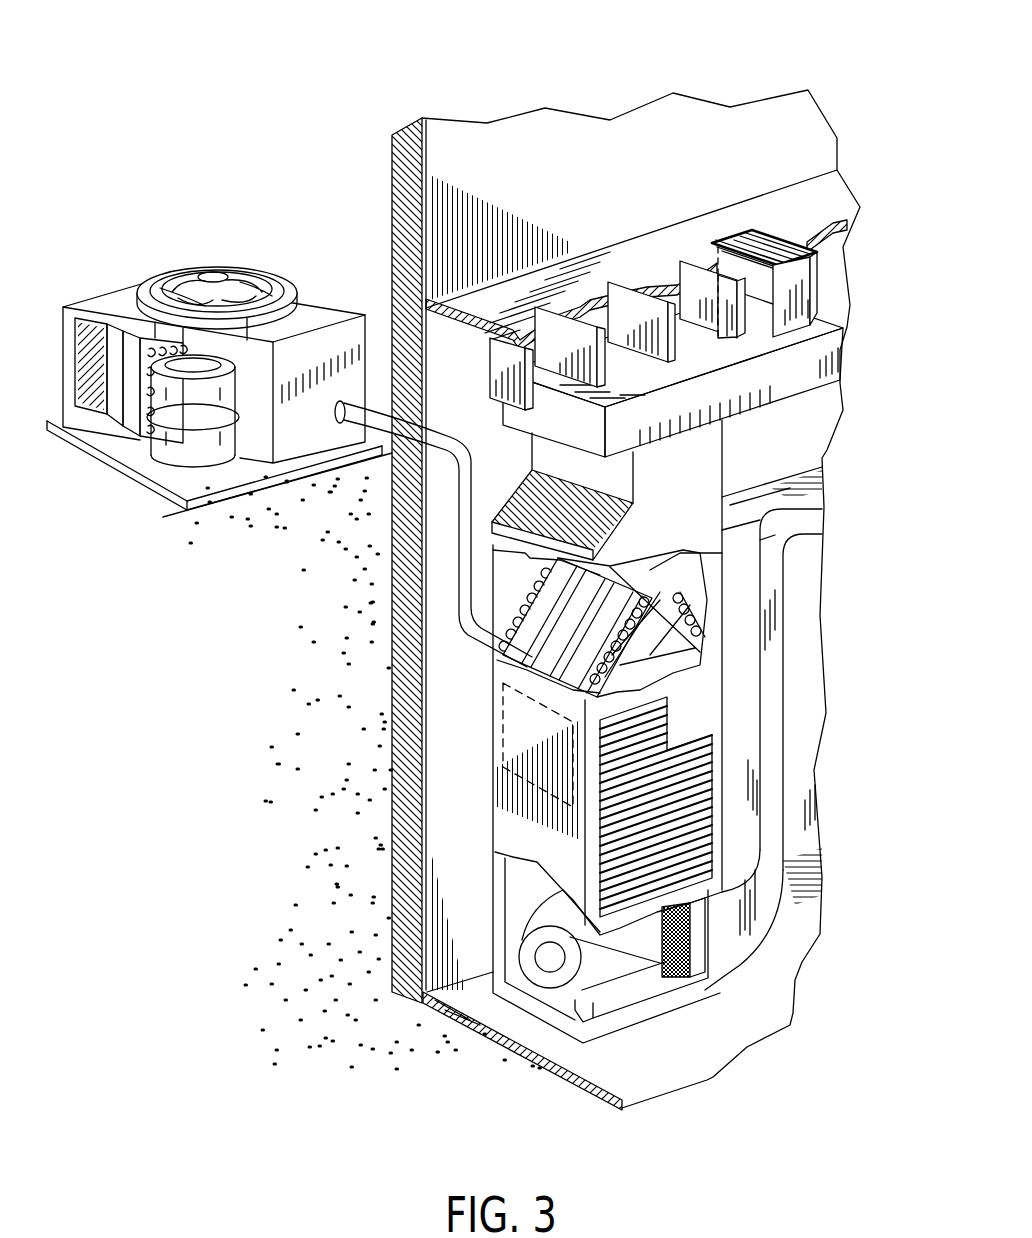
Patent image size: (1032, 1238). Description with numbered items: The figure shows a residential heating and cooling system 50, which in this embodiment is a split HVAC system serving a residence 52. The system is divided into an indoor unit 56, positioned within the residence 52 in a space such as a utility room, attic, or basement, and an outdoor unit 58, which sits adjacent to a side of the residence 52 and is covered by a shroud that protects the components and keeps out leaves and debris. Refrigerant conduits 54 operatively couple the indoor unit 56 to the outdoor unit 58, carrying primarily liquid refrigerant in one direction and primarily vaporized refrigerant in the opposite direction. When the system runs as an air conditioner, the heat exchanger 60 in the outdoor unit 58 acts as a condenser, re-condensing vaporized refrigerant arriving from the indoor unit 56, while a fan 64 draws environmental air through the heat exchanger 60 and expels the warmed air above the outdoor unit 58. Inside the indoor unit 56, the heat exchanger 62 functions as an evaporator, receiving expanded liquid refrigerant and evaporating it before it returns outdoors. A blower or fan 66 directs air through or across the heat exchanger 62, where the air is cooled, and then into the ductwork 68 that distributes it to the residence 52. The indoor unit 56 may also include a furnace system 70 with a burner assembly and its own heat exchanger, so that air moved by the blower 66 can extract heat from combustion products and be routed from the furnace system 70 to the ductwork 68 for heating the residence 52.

The residential heating and cooling system 50 is at (211, 83).
The residence 52 is at (533, 140).
The refrigerant conduits 54 is at (460, 532).
The indoor unit 56 is at (468, 790).
The outdoor unit 58 is at (175, 261).
The heat exchanger 60 is at (145, 343).
The heat exchanger 62 is at (553, 652).
The fan 64 is at (234, 280).
The blower or fan 66 is at (543, 982).
The ductwork 68 is at (770, 375).
The furnace system 70 is at (503, 740).